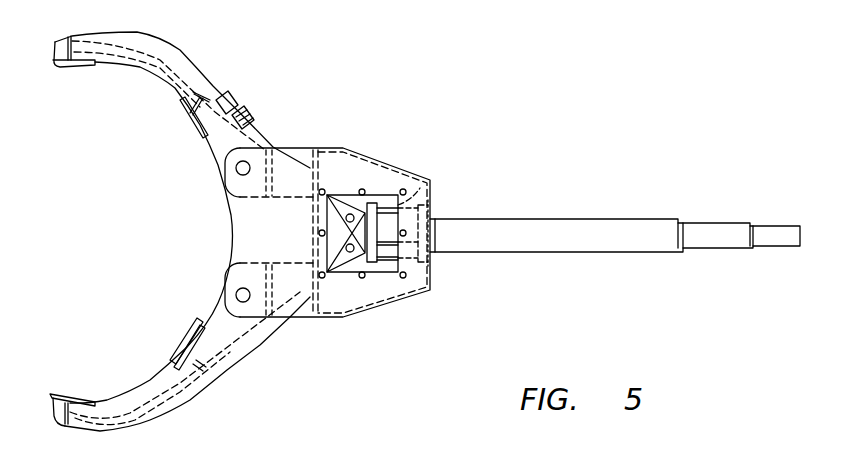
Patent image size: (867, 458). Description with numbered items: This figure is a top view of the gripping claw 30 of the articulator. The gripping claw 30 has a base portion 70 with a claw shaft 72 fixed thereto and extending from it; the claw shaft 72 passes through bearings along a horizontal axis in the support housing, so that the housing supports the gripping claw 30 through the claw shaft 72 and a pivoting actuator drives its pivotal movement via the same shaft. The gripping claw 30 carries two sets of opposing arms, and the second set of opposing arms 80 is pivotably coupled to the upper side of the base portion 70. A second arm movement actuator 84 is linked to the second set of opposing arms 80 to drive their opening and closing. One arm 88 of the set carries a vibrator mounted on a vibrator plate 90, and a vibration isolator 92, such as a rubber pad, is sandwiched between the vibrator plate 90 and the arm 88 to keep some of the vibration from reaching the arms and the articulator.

The gripping claw 30 is at (484, 122).
The base portion 70 is at (372, 177).
The claw shaft 72 is at (590, 228).
The second set of opposing arms 80 is at (251, 99).
The second arm movement actuator 84 is at (432, 186).
The arm 88 is at (230, 363).
The vibrator plate 90 is at (177, 345).
The vibration isolator 92 is at (184, 338).